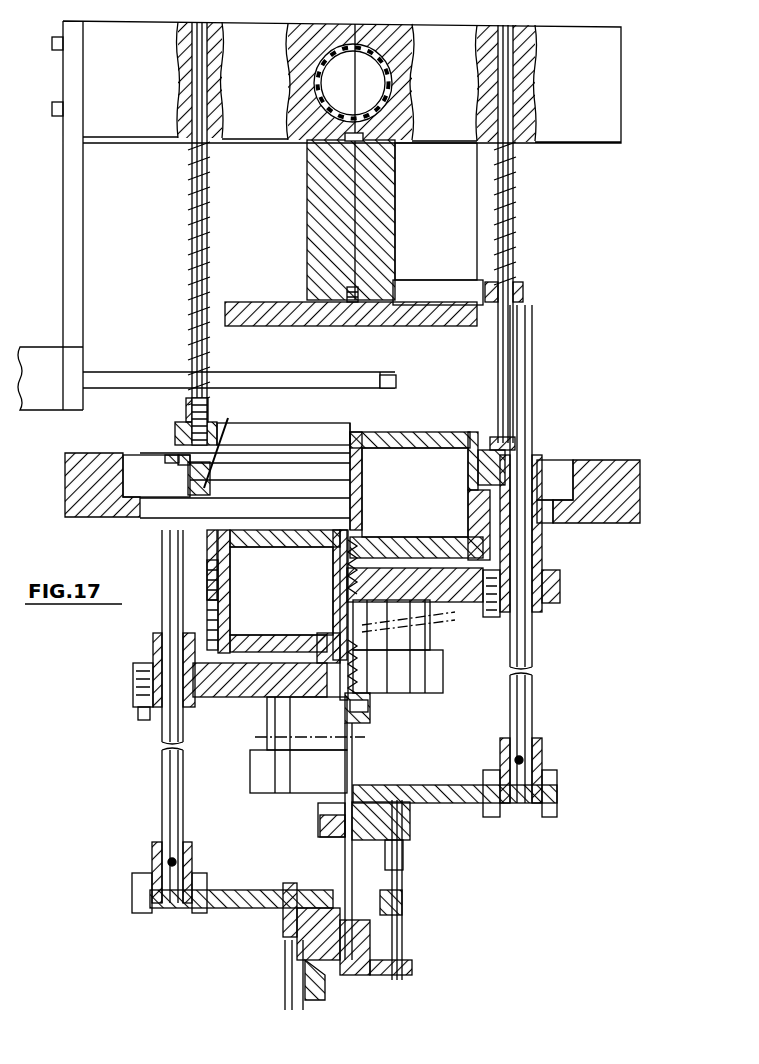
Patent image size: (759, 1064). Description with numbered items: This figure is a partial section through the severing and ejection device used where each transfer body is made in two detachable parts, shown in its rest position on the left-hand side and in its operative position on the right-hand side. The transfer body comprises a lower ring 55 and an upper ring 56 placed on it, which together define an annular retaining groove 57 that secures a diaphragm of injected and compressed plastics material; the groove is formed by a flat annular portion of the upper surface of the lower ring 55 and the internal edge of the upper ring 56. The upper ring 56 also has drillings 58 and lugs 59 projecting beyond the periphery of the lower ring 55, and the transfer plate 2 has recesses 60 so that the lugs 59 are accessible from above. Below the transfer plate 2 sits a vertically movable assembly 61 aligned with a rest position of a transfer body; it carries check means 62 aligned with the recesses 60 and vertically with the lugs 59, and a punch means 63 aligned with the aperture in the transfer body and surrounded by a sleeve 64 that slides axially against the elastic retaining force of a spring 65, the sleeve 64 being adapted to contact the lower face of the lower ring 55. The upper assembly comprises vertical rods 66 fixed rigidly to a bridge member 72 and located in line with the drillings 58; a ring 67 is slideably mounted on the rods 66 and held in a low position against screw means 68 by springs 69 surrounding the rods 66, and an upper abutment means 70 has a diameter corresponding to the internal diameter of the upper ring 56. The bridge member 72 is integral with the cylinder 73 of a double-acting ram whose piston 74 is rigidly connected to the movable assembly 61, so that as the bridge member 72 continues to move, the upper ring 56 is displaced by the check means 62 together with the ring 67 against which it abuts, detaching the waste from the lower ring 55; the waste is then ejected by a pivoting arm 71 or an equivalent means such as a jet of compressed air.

The transfer plate 2 is at (625, 520).
The lower ring 55 is at (188, 487).
The upper ring 56 is at (227, 442).
The annular retaining groove 57 is at (214, 478).
The drillings 58 is at (210, 482).
The lugs 59 is at (174, 462).
The recesses 60 is at (553, 475).
The vertically movable assembly 61 is at (227, 712).
The check means 62 is at (165, 580).
The punch means 63 is at (230, 578).
The sleeve 64 is at (207, 545).
The spring 65 is at (225, 618).
The vertical rods 66 is at (497, 218).
The ring 67 is at (545, 282).
The screw means 68 is at (494, 437).
The springs 69 is at (525, 178).
The upper abutment means 70 is at (445, 326).
The pivoting arm 71 is at (396, 382).
The bridge member 72 is at (233, 925).
The cylinder 73 is at (420, 860).
The piston 74 is at (418, 903).